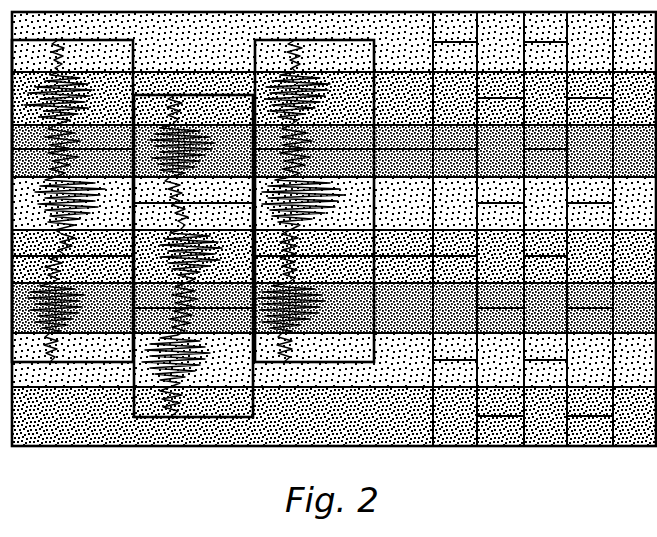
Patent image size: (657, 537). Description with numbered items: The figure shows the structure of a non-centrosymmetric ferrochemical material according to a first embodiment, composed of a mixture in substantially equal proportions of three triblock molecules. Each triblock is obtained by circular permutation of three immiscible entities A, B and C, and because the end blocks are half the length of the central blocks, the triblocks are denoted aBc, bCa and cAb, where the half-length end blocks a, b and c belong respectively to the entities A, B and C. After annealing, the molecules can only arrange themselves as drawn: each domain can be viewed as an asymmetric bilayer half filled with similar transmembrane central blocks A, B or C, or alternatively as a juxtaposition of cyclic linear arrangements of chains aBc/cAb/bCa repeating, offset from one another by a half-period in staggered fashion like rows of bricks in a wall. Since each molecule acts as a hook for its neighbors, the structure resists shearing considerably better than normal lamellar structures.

The immiscible entity A is at (334, 259).
The immiscible entity B is at (334, 229).
The immiscible entity C is at (334, 199).
The end block a is at (312, 256).
The end block b is at (312, 226).
The end block c is at (373, 198).